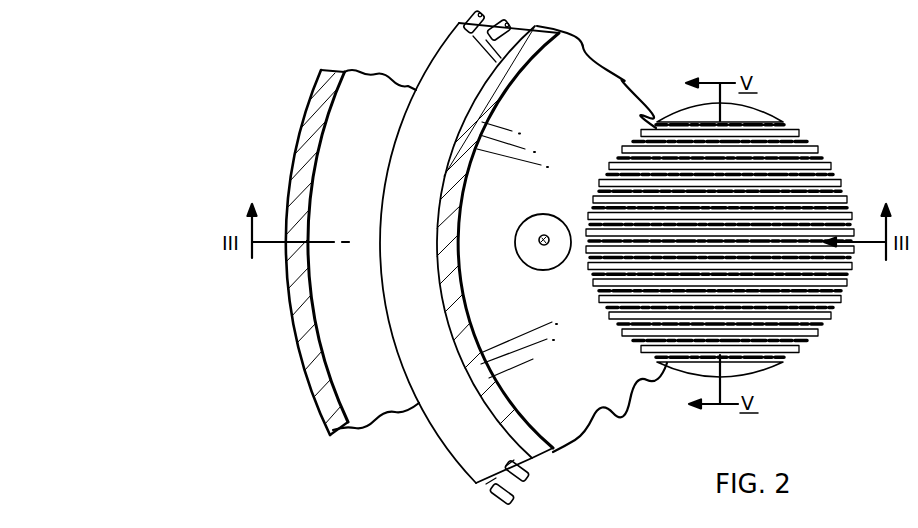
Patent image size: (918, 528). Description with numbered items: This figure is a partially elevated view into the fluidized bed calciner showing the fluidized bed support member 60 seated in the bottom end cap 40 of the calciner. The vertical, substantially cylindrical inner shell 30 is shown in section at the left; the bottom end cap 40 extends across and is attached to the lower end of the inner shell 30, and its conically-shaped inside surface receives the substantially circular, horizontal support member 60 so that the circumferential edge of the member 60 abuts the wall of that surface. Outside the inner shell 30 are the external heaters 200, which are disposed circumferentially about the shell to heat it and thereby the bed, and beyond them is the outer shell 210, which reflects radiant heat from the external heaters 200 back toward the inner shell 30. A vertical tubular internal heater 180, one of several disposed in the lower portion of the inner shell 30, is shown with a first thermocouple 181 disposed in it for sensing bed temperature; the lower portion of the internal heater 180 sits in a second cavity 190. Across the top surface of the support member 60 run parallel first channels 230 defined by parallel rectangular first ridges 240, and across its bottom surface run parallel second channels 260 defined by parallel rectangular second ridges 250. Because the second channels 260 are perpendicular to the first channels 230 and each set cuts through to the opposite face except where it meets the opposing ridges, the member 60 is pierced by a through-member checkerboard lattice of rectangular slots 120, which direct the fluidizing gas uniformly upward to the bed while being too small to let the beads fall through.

The inner shell 30 is at (553, 454).
The bottom end cap 40 is at (605, 423).
The fluidized bed support member 60 is at (787, 366).
The rectangular slots 120 is at (754, 142).
The internal heaters 180 is at (546, 246).
The first thermocouples 181 is at (539, 242).
The second cavity 190 is at (530, 228).
The external heaters 200 is at (432, 58).
The outer shell 210 is at (302, 118).
The first channels 230 is at (806, 143).
The first ridges 240 is at (838, 180).
The second ridges 250 is at (840, 275).
The second channels 260 is at (682, 346).